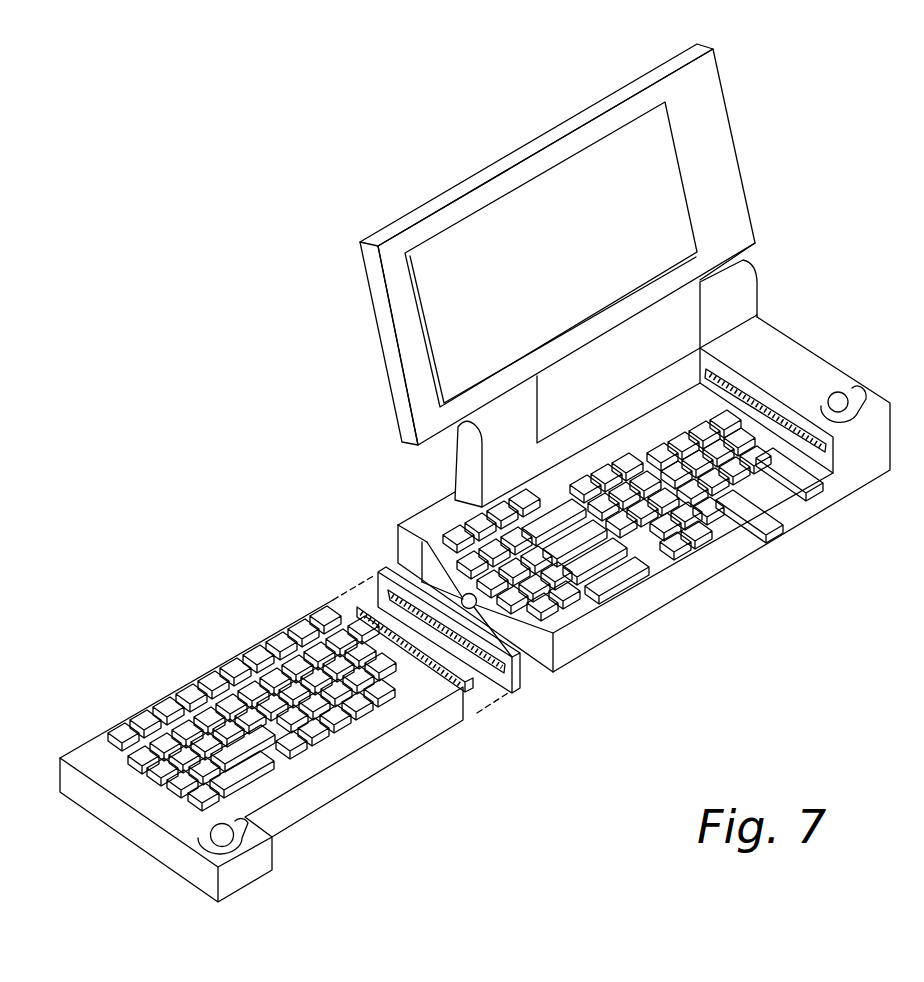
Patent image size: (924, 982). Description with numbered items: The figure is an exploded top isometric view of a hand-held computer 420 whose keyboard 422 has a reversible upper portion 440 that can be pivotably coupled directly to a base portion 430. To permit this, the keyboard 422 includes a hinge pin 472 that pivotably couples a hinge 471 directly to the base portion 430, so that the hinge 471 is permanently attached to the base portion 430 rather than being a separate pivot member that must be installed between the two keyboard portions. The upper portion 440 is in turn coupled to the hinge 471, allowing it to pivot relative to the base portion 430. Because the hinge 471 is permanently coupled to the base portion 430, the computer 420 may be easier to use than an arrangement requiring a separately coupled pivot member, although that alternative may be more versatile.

The display housing (lid) 420 is at (811, 257).
The portable computer hinge assembly 422 is at (323, 516).
The computer base unit 430 is at (720, 578).
The detachable keyboard unit 440 is at (248, 870).
The connector bar 471 is at (522, 690).
The pivot link 472 is at (462, 598).